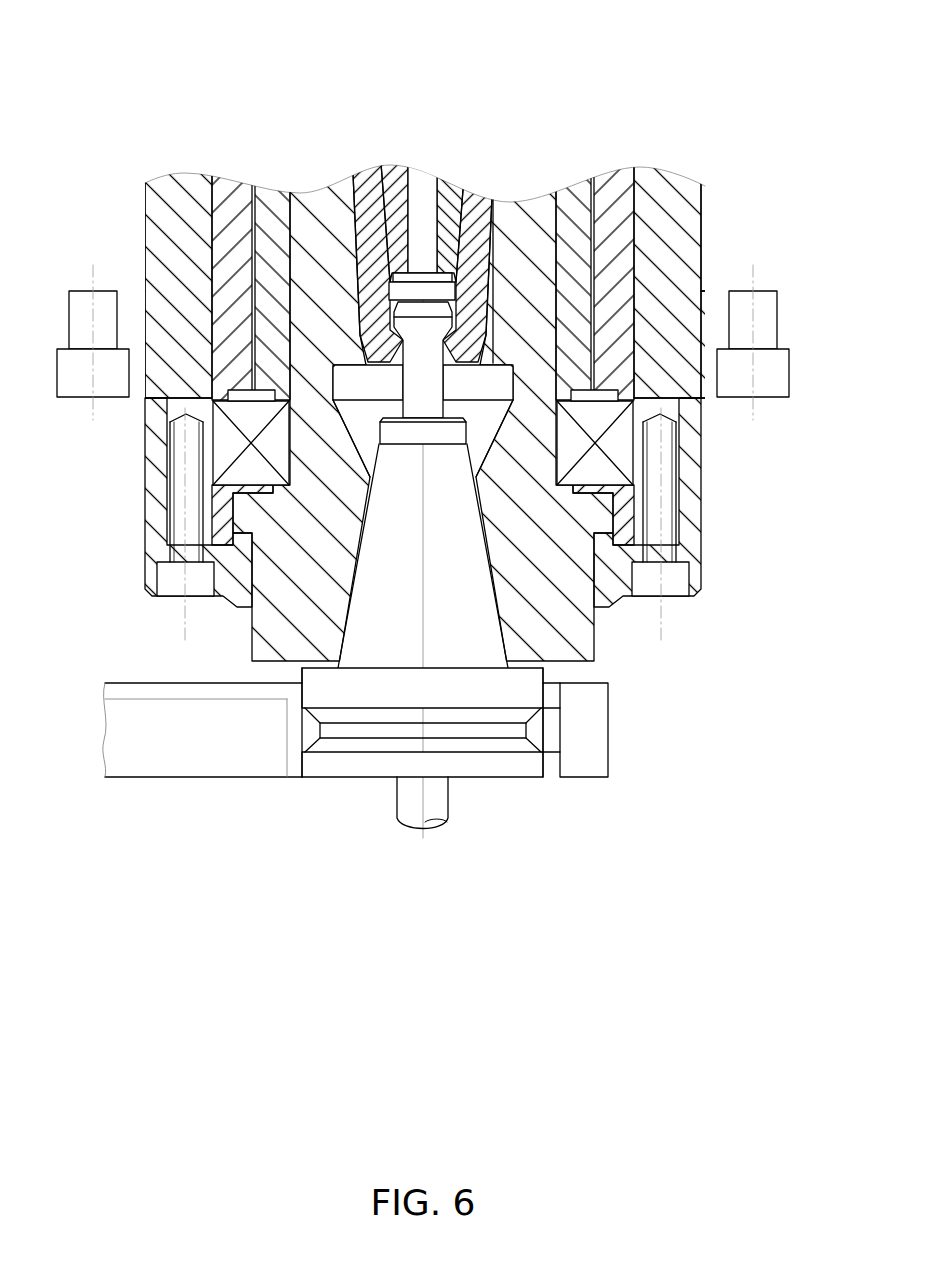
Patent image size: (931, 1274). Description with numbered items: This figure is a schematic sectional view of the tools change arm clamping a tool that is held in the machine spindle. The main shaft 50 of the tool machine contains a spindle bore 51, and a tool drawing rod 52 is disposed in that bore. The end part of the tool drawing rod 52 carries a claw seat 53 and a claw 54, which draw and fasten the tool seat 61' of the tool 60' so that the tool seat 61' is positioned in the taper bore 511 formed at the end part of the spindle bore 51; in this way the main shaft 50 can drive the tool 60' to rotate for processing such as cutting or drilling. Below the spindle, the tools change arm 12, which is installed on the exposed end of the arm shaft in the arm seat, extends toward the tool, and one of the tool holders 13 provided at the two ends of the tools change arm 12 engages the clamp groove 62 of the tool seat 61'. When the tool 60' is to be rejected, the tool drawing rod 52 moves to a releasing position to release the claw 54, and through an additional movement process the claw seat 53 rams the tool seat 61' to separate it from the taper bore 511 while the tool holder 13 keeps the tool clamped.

The tools change arm 12 is at (145, 730).
The tool holder 13 is at (305, 730).
The main shaft of the tool machine 50 is at (318, 202).
The spindle bore 51 is at (487, 300).
The tool drawing rod 52 is at (423, 203).
The claw seat 53 is at (450, 200).
The claw 54 is at (367, 203).
The tool 60' is at (531, 643).
The tool seat 61' is at (549, 485).
The clamp groove 62 is at (522, 733).
The taper bore 511 is at (502, 637).